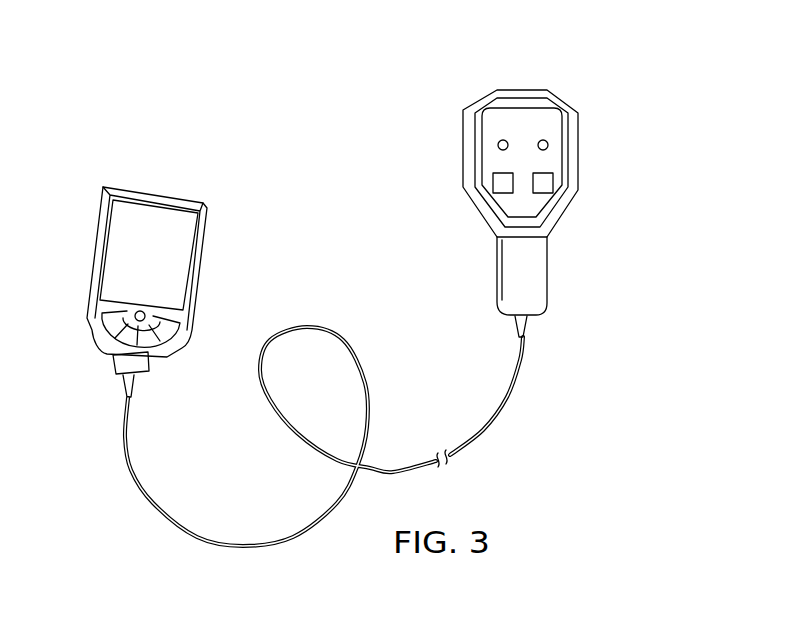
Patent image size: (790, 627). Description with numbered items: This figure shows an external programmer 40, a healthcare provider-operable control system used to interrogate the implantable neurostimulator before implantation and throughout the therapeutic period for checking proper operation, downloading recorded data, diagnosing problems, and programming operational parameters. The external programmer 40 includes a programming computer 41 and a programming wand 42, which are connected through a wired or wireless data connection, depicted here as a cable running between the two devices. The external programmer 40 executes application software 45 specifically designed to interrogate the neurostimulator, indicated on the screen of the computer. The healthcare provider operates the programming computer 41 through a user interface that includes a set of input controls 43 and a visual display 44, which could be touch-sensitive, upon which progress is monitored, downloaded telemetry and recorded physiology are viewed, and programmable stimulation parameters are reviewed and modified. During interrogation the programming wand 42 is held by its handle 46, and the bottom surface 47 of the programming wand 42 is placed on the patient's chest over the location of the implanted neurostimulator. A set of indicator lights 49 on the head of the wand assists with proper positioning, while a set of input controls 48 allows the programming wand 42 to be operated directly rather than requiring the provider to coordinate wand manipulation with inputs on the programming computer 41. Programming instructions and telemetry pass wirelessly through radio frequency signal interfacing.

The external programmer 40 is at (181, 119).
The programming computer 41 is at (92, 269).
The programming wand 42 is at (580, 157).
The input controls 43 is at (103, 328).
The visual display 44 is at (200, 252).
The application software 45 is at (130, 258).
The handle 46 is at (497, 268).
The bottom surface 47 is at (411, 155).
The input controls 48 is at (492, 178).
The indicator lights 49 is at (496, 145).